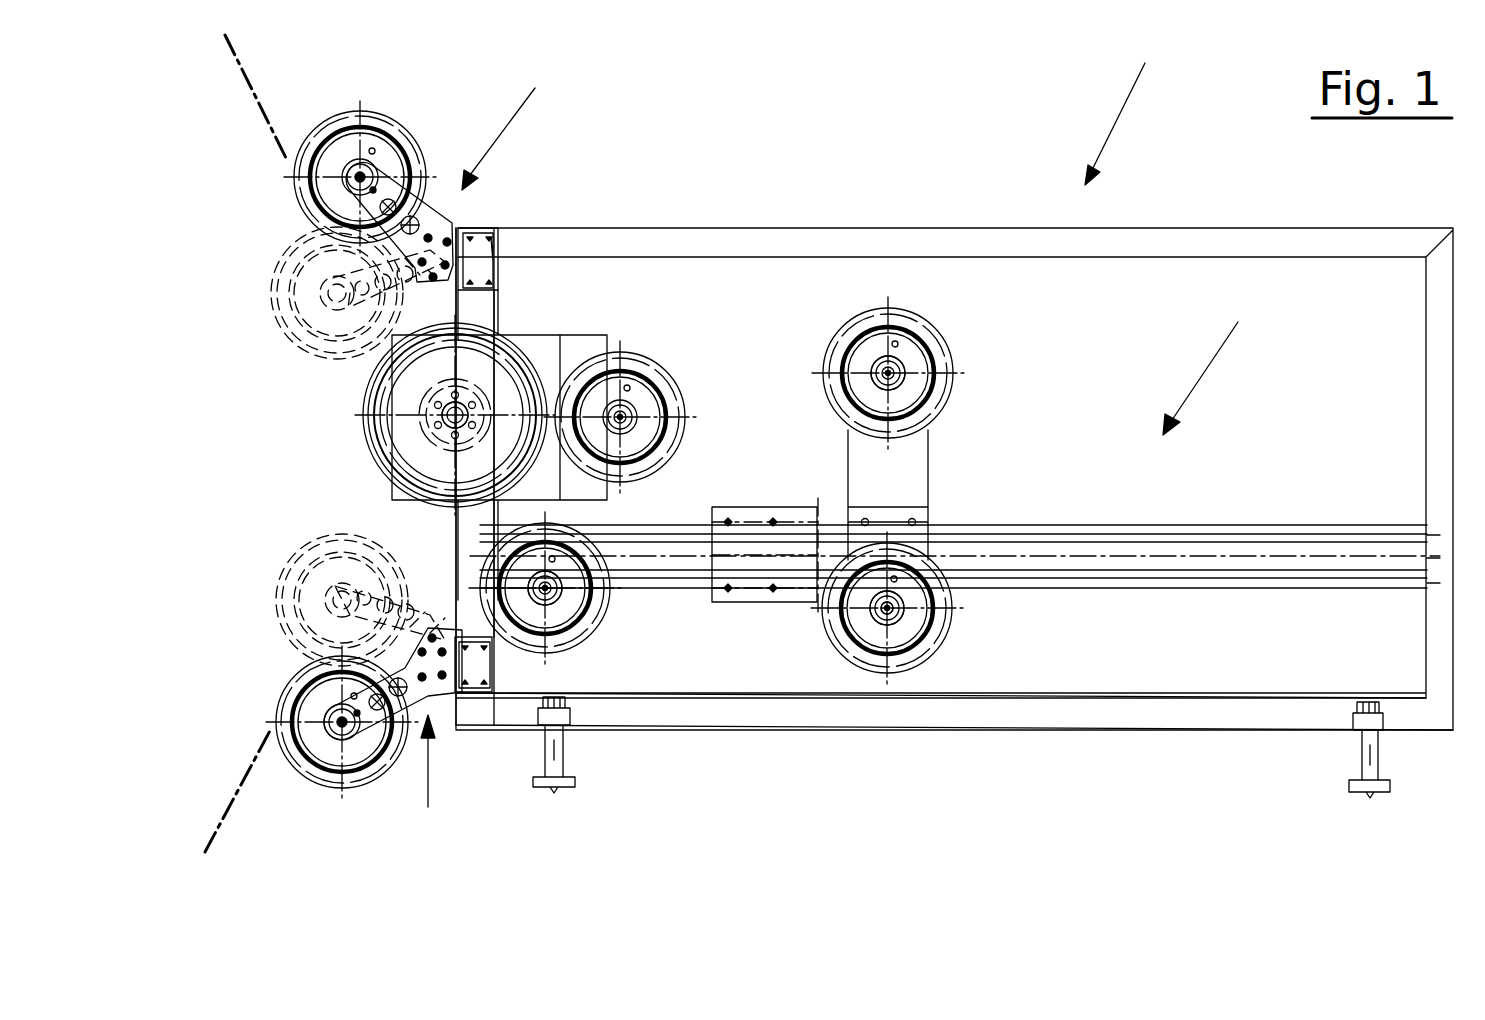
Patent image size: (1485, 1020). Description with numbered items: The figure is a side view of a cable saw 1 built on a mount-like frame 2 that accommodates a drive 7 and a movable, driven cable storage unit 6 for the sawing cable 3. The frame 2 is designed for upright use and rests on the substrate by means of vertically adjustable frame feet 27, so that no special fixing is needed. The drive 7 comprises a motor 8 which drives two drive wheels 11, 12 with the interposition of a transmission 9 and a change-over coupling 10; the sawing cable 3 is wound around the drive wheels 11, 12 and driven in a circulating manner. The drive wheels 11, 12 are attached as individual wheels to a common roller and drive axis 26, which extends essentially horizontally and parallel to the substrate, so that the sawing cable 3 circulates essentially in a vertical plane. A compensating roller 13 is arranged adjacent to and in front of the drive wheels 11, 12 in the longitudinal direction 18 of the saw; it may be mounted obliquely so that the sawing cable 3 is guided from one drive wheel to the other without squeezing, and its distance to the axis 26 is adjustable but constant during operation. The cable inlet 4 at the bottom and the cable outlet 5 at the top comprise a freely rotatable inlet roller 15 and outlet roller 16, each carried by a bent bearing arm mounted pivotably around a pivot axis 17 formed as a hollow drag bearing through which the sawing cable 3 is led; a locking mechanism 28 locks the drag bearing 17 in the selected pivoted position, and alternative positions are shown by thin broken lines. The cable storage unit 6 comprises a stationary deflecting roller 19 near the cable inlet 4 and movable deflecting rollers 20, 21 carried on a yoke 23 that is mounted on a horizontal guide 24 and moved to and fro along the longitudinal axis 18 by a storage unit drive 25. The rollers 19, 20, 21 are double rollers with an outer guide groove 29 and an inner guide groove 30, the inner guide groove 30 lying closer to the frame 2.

The cable saw 1 is at (1124, 110).
The frame 2 is at (1098, 710).
The sawing cable 3 is at (270, 136).
The cable inlet 4 is at (428, 783).
The cable outlet 5 is at (511, 122).
The cable storage unit 6 is at (1211, 360).
The drive 7 is at (595, 365).
The motor 8 is at (595, 365).
The transmission 9 is at (595, 365).
The change-over coupling 10 is at (605, 333).
The drive wheel 11 is at (367, 415).
The drive wheel 12 is at (370, 443).
The compensating roller 13 is at (667, 390).
The inlet roller 15 is at (318, 775).
The outlet roller 16 is at (395, 127).
The pivot axis 17 is at (537, 270).
The longitudinal direction 18 is at (955, 491).
The stationary deflecting roller 19 is at (578, 593).
The deflecting roller 20 is at (913, 617).
The deflecting roller 21 is at (910, 352).
The yoke 23 is at (903, 460).
The horizontal guide 24 is at (1203, 583).
The storage unit drive 25 is at (1338, 560).
The roller and drive axis 26 is at (450, 410).
The frame foot 27 is at (1357, 749).
The locking mechanism 28 is at (403, 618).
The outer guide groove 29 is at (829, 574).
The inner guide groove 30 is at (953, 360).